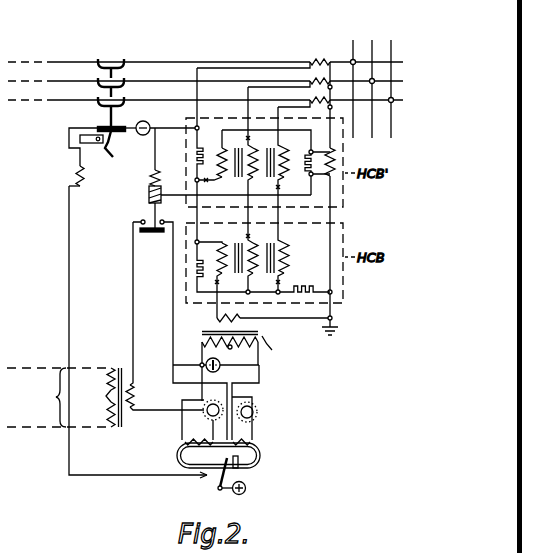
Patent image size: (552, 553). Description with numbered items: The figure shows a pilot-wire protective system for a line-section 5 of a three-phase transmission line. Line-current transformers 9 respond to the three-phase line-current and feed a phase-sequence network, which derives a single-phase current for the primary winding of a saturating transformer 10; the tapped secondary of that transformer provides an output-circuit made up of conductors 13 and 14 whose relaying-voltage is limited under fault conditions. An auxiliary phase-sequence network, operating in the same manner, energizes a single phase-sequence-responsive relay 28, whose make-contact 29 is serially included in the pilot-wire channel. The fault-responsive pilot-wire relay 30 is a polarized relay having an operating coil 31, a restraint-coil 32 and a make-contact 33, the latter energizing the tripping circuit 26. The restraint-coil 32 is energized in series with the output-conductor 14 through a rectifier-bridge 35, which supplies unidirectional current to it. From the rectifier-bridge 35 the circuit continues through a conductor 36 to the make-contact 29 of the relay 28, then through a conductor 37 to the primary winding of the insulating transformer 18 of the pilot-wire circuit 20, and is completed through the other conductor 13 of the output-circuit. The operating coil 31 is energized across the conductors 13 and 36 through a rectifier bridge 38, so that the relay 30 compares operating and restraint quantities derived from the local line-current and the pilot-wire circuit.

The line-section 5 is at (75, 100).
The line-current transformers 9 is at (327, 49).
The saturating transformer 10 is at (206, 331).
The output-circuit conductor 13 is at (150, 412).
The output-conductor 14 is at (260, 384).
The insulating transformer 18 is at (119, 367).
The pilot-wire circuit 20 is at (59, 397).
The tripping circuit 26 is at (100, 478).
The phase-sequence-responsive relay 28 is at (149, 189).
The make-contact 29 is at (142, 220).
The pilot-wire relay 30 is at (255, 452).
The operating coil 31 is at (183, 444).
The restraint-coil 32 is at (260, 438).
The make-contact 33 is at (204, 480).
The rectifier-bridge 35 is at (258, 419).
The conductor 36 is at (173, 277).
The conductor 37 is at (133, 297).
The rectifier bridge 38 is at (202, 420).